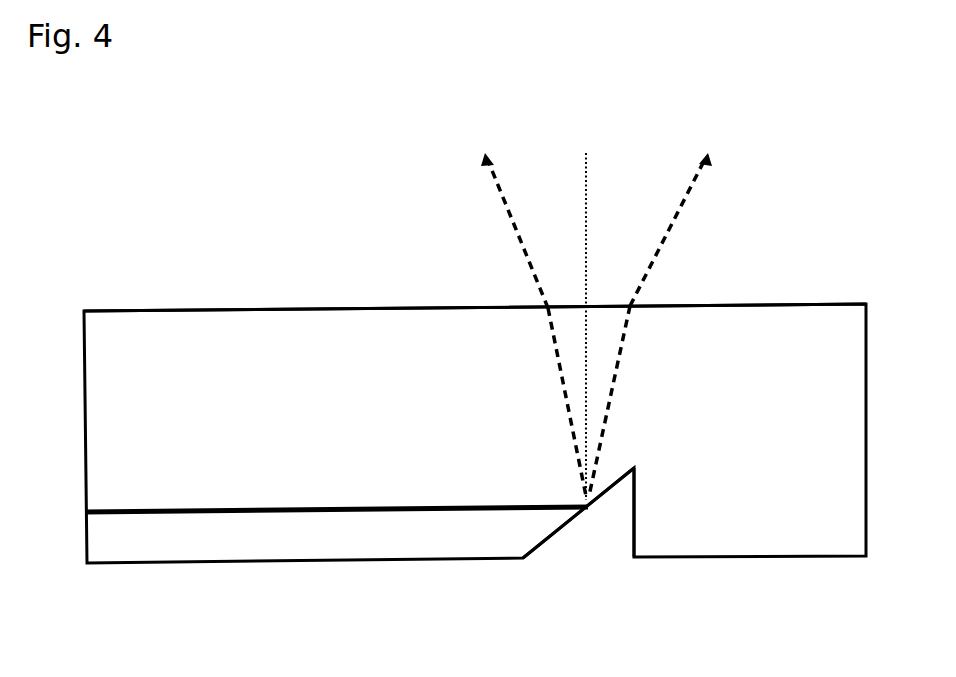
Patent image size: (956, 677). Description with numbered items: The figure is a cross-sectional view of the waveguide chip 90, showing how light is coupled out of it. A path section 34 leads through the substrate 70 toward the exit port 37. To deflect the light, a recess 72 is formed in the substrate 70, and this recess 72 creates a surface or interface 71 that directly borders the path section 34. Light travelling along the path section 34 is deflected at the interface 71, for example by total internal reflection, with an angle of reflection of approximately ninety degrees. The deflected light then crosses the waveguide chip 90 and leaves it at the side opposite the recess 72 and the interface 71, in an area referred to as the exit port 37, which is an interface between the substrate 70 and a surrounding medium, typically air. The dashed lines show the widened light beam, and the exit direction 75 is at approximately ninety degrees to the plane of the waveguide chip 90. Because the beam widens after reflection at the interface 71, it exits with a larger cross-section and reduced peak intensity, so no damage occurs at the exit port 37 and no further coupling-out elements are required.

The substrate 70 is at (771, 436).
The waveguide chip 90 is at (191, 301).
The path section 34 is at (290, 514).
The surface or interface 71 is at (545, 543).
The recess 72 is at (594, 538).
The exit direction 75 is at (587, 168).
The exit port 37 is at (561, 300).